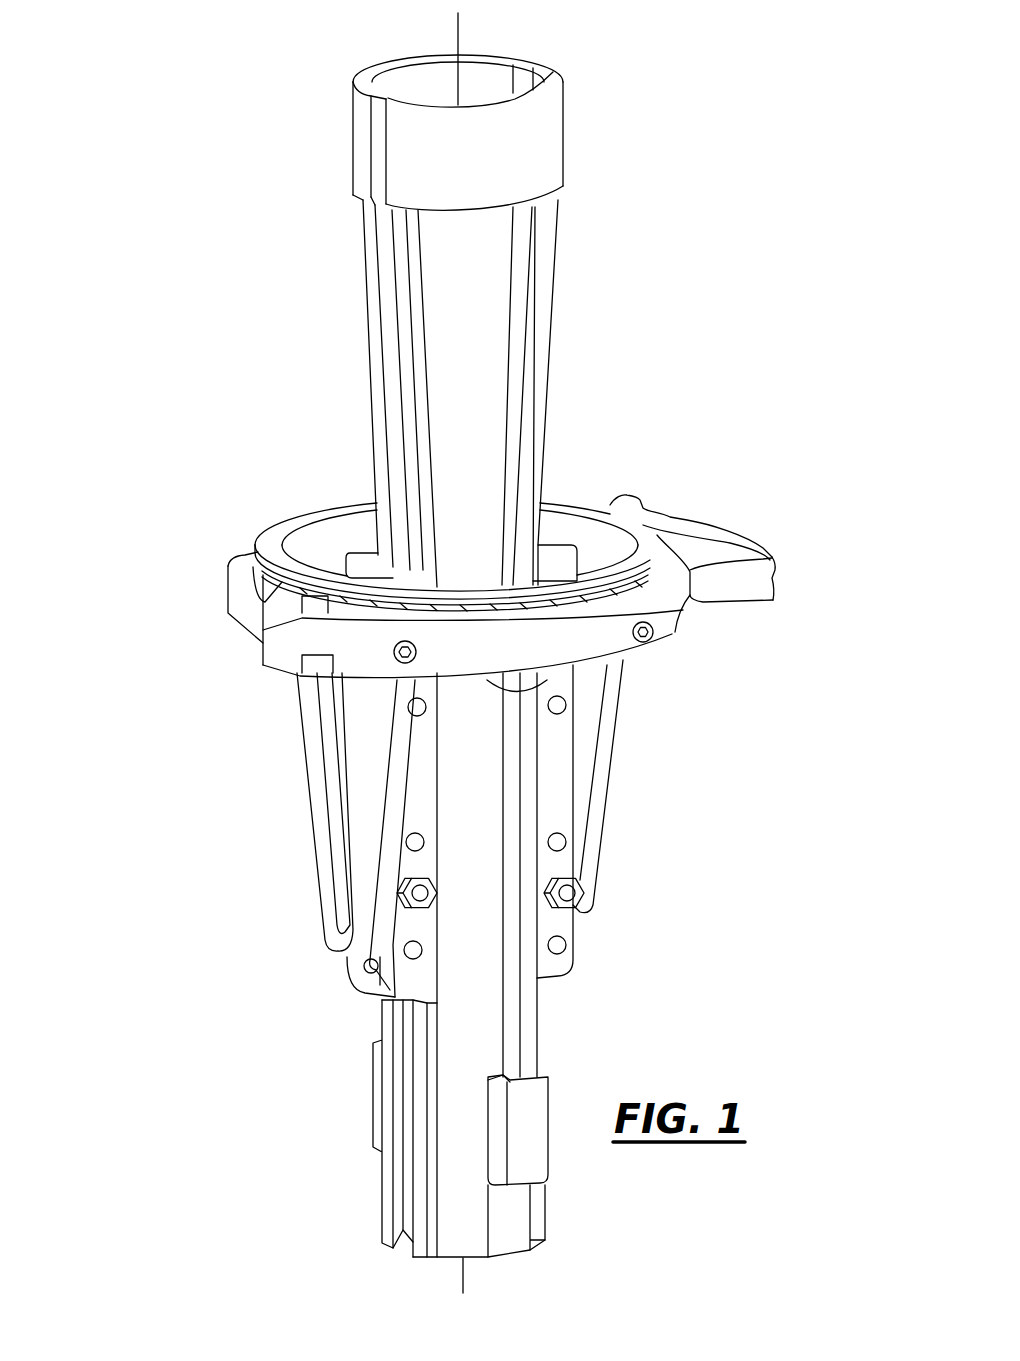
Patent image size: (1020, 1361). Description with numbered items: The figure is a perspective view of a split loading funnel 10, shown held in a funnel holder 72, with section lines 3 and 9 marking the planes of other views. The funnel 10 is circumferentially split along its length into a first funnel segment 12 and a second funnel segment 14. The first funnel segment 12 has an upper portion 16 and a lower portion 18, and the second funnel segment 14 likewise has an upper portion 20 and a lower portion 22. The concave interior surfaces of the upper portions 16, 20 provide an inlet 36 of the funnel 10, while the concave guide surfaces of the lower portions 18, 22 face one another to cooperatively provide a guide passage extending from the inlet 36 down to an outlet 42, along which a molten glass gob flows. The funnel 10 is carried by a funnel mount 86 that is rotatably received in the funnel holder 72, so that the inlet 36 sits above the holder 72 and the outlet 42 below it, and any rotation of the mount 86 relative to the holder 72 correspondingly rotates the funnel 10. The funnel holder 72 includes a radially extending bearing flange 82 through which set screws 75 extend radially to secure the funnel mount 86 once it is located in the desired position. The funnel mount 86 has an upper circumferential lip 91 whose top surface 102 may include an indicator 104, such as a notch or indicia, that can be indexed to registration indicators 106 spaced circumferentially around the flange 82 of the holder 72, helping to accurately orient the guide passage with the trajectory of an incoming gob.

The section line 3- 3 is at (446, 30).
The section line 9- 9 is at (262, 843).
The split loading funnel 10 is at (318, 120).
The first funnel segment 12 is at (343, 188).
The second funnel segment 14 is at (578, 105).
The upper portion 16 is at (380, 290).
The lower portion 18 is at (383, 1025).
The upper portion 20 is at (412, 372).
The lower portion 22 is at (418, 1076).
The inlet 36 is at (500, 48).
The outlet 42 is at (548, 1255).
The funnel holder 72 is at (166, 616).
The set screws 75 is at (618, 637).
The bearing flange 82 is at (232, 576).
The funnel mount 86 is at (256, 714).
The upper circumferential lip 91 is at (633, 570).
The top surface 102 is at (280, 537).
The indicator 104 is at (313, 568).
The registration indicators 106 is at (300, 614).